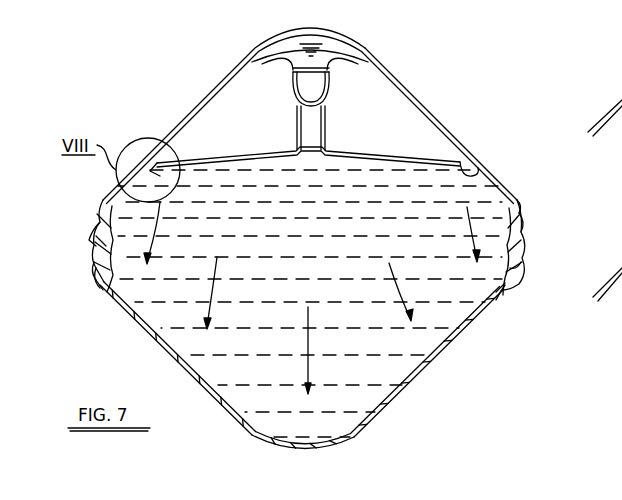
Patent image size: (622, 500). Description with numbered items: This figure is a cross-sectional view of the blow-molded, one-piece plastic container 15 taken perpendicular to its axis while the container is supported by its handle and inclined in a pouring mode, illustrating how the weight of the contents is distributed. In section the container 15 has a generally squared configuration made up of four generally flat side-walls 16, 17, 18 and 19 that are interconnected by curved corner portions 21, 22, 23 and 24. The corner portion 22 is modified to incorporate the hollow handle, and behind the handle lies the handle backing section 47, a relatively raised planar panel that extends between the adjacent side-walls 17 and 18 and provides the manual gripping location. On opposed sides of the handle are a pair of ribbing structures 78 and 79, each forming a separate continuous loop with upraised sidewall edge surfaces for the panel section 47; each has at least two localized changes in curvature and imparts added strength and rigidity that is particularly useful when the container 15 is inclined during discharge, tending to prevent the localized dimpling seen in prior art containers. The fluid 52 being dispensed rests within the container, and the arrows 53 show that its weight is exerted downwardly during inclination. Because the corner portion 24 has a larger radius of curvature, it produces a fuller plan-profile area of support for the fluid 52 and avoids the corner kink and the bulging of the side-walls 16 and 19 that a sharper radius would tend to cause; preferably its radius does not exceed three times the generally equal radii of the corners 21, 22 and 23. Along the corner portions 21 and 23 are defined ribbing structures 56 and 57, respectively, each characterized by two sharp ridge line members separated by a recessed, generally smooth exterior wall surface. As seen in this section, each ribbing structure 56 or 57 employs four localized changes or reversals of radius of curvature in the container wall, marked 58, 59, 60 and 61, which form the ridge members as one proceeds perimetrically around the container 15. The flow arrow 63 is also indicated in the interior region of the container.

The container 15 is at (505, 307).
The side-wall 16 is at (454, 348).
The side-wall 17 is at (396, 78).
The side-wall 18 is at (621, 46).
The side-wall 19 is at (140, 332).
The curved corner portion 21 is at (526, 272).
The curved corner portion 22 is at (327, 40).
The curved corner portion 23 is at (92, 275).
The curved corner portion 24 is at (297, 447).
The handle backing section 47 is at (373, 123).
The fluid 52 is at (273, 175).
The arrows 53 is at (308, 317).
The ribbing structure 56 is at (520, 265).
The ribbing structure 57 is at (97, 248).
The localized change in curvature 58 is at (90, 212).
The localized change in curvature 59 is at (96, 230).
The localized change in curvature 60 is at (92, 272).
The localized change in curvature 61 is at (97, 285).
The flow arrow 63 is at (500, 255).
The ribbing structure 78 is at (148, 139).
The ribbing structure 79 is at (471, 150).